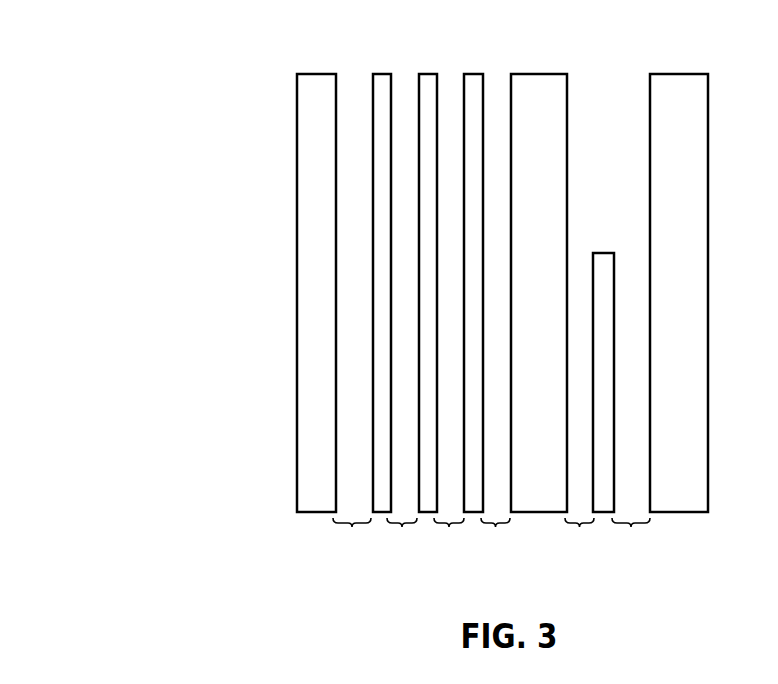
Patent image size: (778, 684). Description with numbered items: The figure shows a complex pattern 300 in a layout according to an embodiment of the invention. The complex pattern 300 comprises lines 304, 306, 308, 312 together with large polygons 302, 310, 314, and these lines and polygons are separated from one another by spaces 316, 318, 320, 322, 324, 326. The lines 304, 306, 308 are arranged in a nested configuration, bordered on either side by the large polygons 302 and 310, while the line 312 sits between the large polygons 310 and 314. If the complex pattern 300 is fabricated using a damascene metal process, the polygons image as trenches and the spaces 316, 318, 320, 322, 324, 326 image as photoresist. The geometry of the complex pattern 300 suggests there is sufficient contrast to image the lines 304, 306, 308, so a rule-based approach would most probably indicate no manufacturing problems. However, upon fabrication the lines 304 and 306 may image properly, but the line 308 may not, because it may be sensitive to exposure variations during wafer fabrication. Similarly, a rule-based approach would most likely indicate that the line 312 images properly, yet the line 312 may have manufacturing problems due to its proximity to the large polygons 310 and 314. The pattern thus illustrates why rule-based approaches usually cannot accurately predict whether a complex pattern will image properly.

The complex pattern 300 is at (242, 44).
The large polygon 302 is at (316, 278).
The line 304 is at (380, 72).
The line 306 is at (428, 72).
The line 308 is at (477, 72).
The large polygon 310 is at (539, 277).
The line 312 is at (603, 368).
The large polygon 314 is at (679, 277).
The space 316 is at (352, 535).
The space 318 is at (403, 528).
The space 320 is at (450, 528).
The space 322 is at (494, 528).
The space 324 is at (579, 535).
The space 326 is at (631, 535).